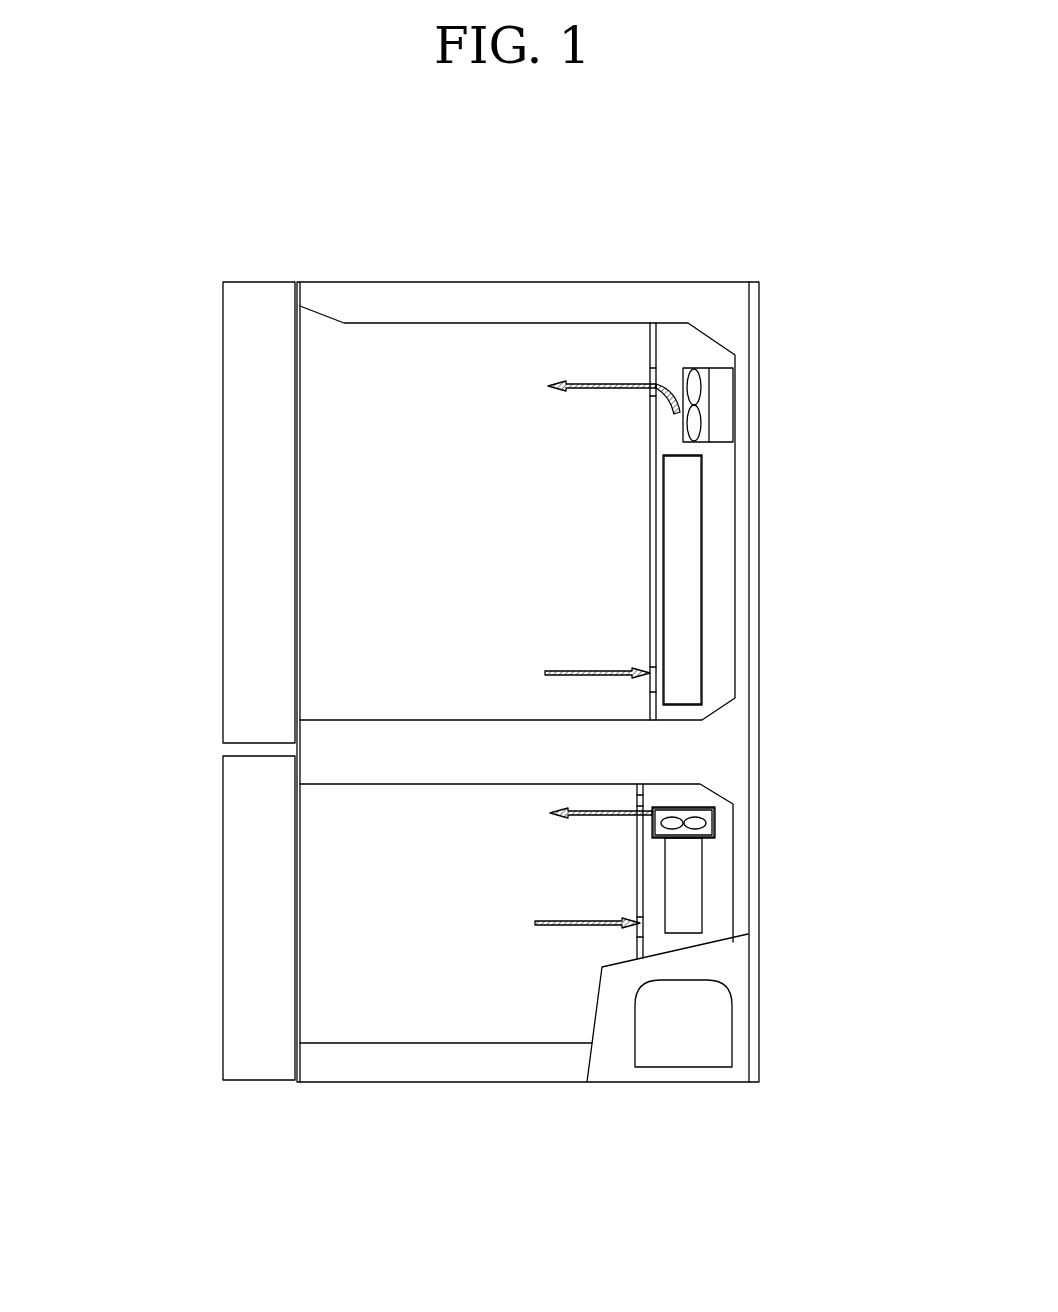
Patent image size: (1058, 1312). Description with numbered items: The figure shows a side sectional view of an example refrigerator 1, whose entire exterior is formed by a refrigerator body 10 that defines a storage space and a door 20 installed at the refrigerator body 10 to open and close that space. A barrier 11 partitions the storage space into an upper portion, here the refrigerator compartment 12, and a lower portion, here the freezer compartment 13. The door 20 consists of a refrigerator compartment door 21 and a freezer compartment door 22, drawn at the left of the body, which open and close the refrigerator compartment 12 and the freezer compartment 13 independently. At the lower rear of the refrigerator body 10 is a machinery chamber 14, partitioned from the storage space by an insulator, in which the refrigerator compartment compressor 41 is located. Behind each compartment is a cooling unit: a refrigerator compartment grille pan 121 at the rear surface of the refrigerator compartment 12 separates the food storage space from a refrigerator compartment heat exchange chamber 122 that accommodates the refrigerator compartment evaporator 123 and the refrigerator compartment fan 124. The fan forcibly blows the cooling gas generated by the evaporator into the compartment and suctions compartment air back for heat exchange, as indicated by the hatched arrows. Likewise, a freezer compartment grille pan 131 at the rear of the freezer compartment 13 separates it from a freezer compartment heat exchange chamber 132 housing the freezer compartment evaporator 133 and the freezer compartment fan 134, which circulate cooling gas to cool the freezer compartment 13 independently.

The refrigerator 1 is at (253, 205).
The refrigerator body 10 is at (713, 268).
The barrier 11 is at (354, 768).
The refrigerator compartment 12 is at (463, 569).
The freezer compartment 13 is at (463, 861).
The machinery chamber 14 is at (620, 1073).
The door 20 is at (128, 725).
The refrigerator compartment door 21 is at (235, 685).
The freezer compartment door 22 is at (247, 820).
The refrigerator compartment compressor 41 is at (703, 1048).
The refrigerator compartment grille pan 121 is at (653, 528).
The refrigerator compartment heat exchange chamber 122 is at (724, 646).
The refrigerator compartment evaporator 123 is at (697, 522).
The refrigerator compartment fan 124 is at (735, 390).
The freezer compartment grille pan 131 is at (641, 874).
The freezer compartment heat exchange chamber 132 is at (729, 827).
The freezer compartment evaporator 133 is at (703, 893).
The freezer compartment fan 134 is at (716, 796).